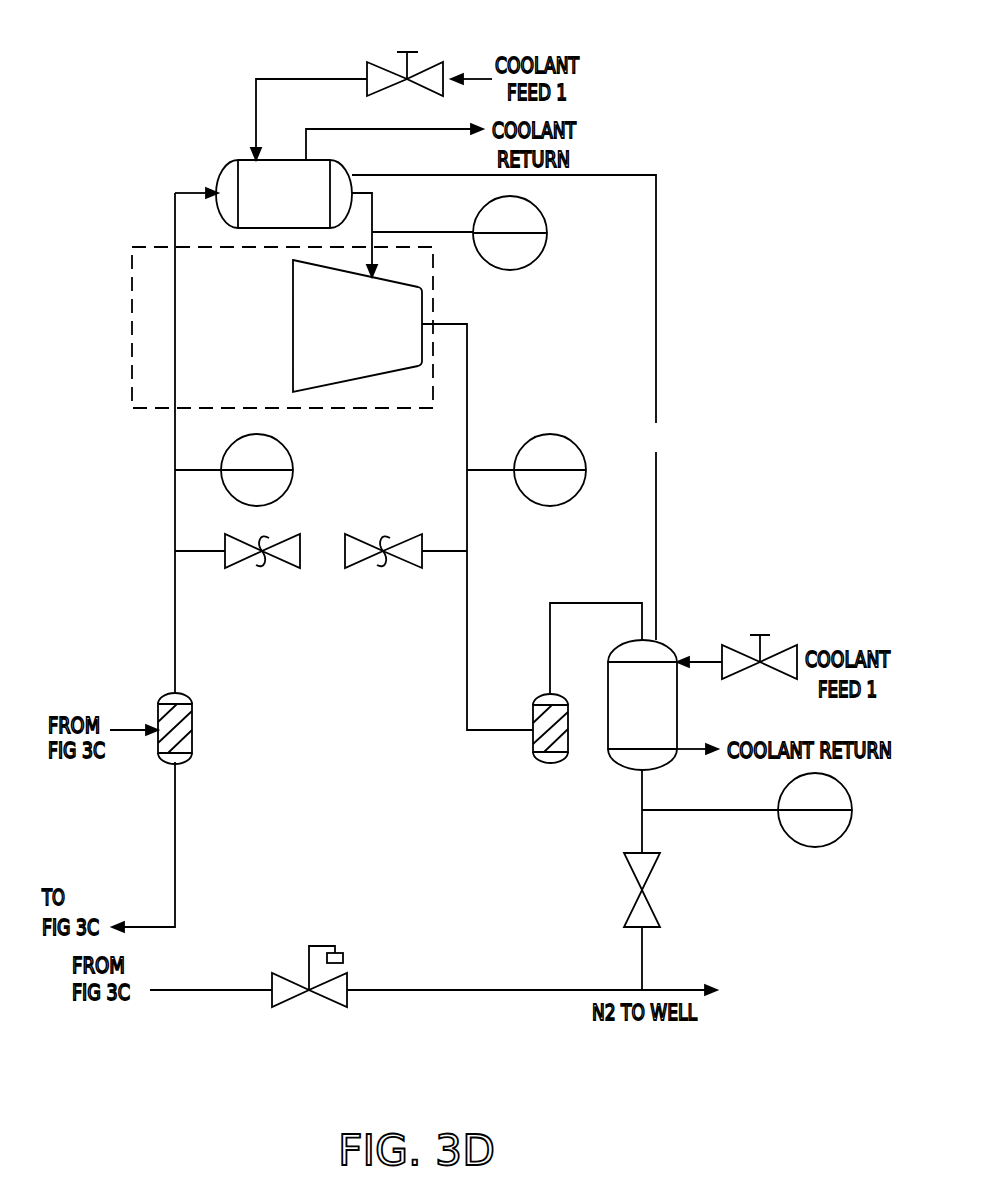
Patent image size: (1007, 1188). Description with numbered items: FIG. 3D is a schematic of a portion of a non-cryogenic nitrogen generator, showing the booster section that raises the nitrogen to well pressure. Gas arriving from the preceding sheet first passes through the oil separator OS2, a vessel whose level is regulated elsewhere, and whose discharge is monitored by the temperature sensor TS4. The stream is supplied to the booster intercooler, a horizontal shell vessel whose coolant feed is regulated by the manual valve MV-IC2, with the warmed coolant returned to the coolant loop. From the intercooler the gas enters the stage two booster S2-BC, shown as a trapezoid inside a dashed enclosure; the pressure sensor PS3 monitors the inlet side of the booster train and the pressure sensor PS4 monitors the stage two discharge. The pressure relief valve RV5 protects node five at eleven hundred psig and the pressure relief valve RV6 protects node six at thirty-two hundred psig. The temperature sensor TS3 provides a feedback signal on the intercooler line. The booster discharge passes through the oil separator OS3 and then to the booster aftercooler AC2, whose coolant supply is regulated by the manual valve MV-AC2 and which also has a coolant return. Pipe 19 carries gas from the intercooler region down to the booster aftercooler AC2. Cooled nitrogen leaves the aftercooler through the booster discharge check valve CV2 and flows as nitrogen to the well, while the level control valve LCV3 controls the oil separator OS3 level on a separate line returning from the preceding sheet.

The nitrogen pipe to accumulator AC2 19 is at (508, 407).
The manual valve (IC2 coolant regulation) MV-IC2 is at (405, 60).
The temperature sensor 3 TS3 is at (459, 233).
The stage 2 booster S2-BC is at (282, 327).
The pressure sensor 3 PS3 is at (234, 470).
The pressure sensor 4 PS4 is at (526, 470).
The pressure relief valve (node 5) RV5 is at (242, 583).
The pressure relief valve (node 6) RV6 is at (401, 583).
The oil separator 2 OS2 is at (222, 742).
The oil separator 3 OS3 is at (500, 742).
The booster aftercooler AC2 is at (653, 722).
The manual valve (AC2 coolant regulation) MV-AC2 is at (759, 643).
The temperature sensor 4 TS4 is at (747, 810).
The check valve (booster discharge) CV2 is at (656, 890).
The level control valve (OS3 control) LCV3 is at (309, 994).